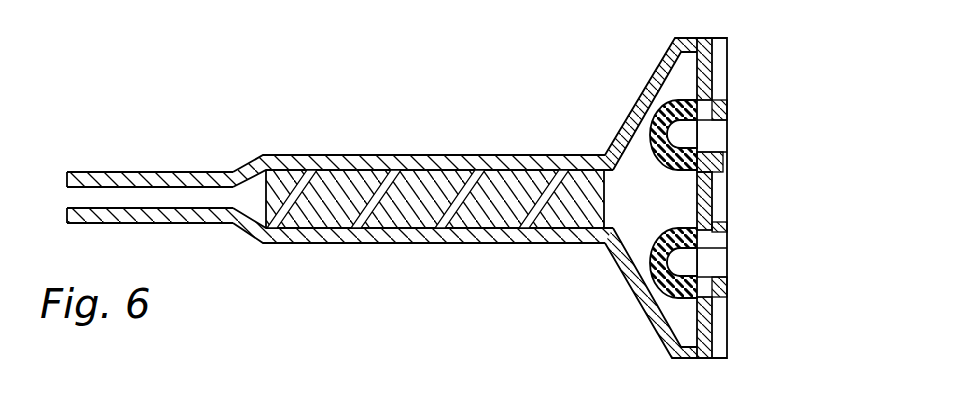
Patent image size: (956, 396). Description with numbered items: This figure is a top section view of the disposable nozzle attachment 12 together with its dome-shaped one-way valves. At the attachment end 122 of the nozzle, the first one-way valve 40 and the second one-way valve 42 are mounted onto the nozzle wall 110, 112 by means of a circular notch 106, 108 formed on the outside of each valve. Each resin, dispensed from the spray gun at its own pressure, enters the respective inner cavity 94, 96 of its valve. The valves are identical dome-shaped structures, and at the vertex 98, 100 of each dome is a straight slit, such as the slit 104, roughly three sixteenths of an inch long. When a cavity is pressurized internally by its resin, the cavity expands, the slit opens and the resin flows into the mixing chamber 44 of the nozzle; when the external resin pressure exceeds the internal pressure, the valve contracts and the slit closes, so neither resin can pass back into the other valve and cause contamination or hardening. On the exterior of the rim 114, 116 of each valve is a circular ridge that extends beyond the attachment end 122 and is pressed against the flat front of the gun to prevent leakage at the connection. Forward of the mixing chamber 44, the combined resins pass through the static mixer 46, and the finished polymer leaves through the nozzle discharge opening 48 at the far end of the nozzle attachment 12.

The nozzle attachment 12 is at (394, 61).
The first one-way valve 40 is at (687, 297).
The second one-way valve 42 is at (683, 100).
The mixing chamber 44 is at (675, 213).
The static mixer 46 is at (345, 177).
The nozzle discharge opening 48 is at (65, 202).
The inner cavity 94 is at (712, 262).
The inner cavity 96 is at (712, 138).
The vertex 98 is at (658, 278).
The vertex 100 is at (655, 132).
The straight slit 104 is at (657, 123).
The circular notch 106 is at (720, 222).
The circular notch 108 is at (730, 172).
The nozzle wall 110 is at (722, 37).
The nozzle wall 112 is at (723, 343).
The rim 114 is at (730, 287).
The rim 116 is at (730, 108).
The attachment end 122 is at (728, 65).